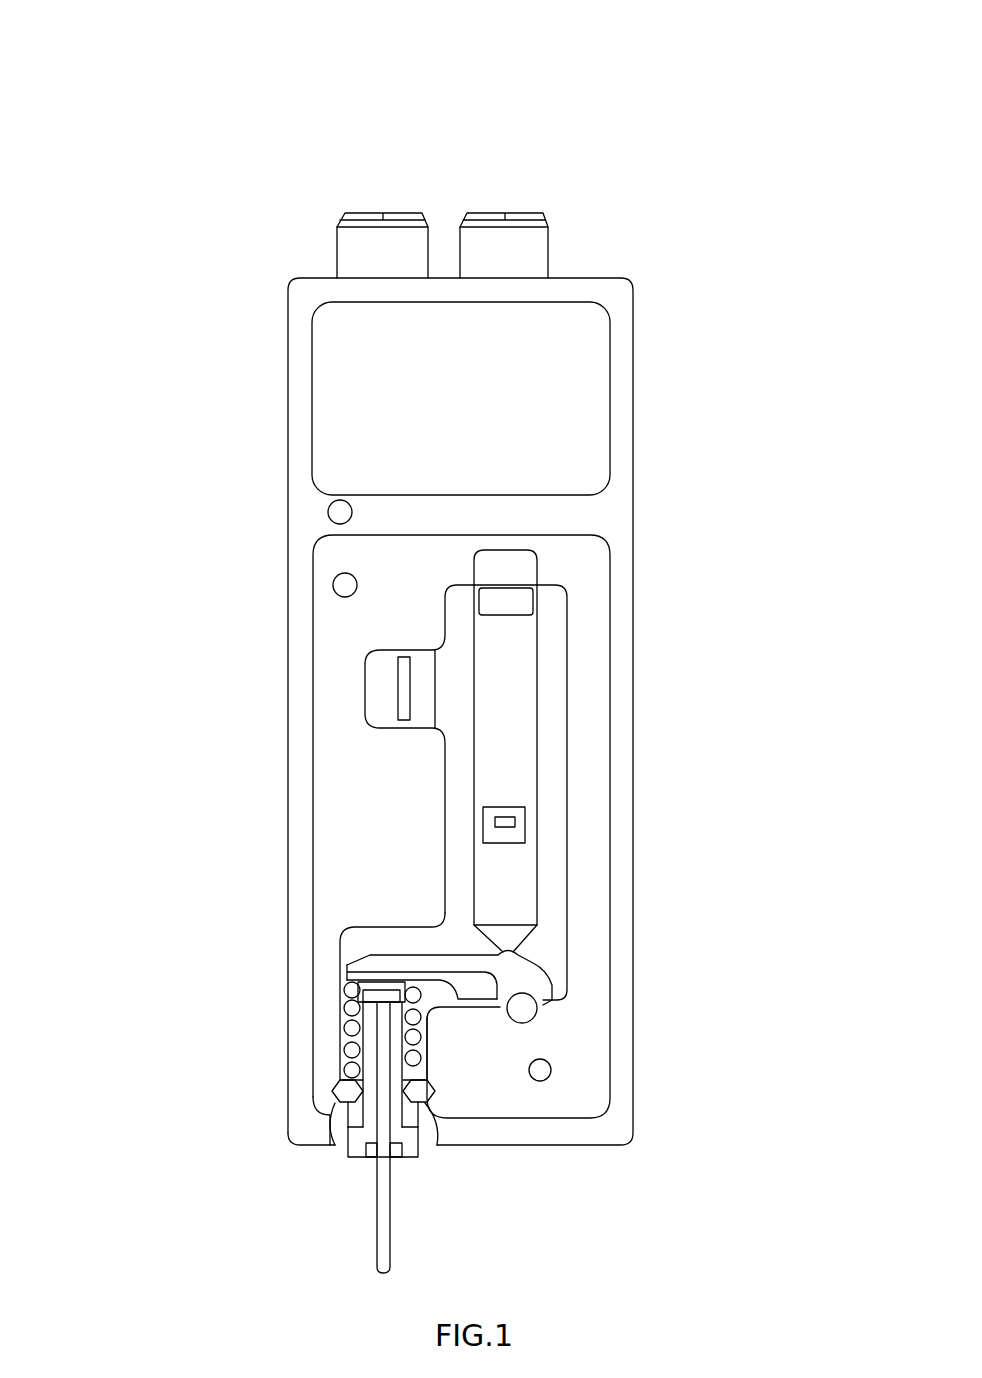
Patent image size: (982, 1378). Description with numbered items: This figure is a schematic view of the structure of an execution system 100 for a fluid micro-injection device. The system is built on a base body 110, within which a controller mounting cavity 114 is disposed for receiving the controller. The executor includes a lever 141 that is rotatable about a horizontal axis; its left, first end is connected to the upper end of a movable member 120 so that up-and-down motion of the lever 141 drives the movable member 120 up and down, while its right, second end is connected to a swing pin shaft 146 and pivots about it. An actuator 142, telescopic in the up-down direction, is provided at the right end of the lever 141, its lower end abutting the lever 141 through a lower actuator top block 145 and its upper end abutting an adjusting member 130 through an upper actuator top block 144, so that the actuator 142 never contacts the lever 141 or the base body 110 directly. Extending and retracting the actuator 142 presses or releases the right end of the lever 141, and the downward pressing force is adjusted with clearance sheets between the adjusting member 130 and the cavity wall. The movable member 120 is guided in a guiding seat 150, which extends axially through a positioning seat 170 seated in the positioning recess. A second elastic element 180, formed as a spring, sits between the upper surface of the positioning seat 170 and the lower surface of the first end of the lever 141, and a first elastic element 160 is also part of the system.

The execution system 100 is at (540, 148).
The base body 110 is at (302, 408).
The controller mounting cavity 114 is at (553, 422).
The movable member 120 is at (382, 1148).
The adjusting member 130 is at (517, 573).
The lever 141 is at (498, 980).
The actuator 142 is at (520, 887).
The upper actuator top block 144 is at (513, 607).
The lower actuator top block 145 is at (502, 937).
The swing pin shaft 146 is at (522, 1008).
The guiding seat 150 is at (397, 1107).
The first elastic element 160 is at (350, 1017).
The positioning seat 170 is at (348, 1093).
The second elastic element 180 is at (353, 1032).